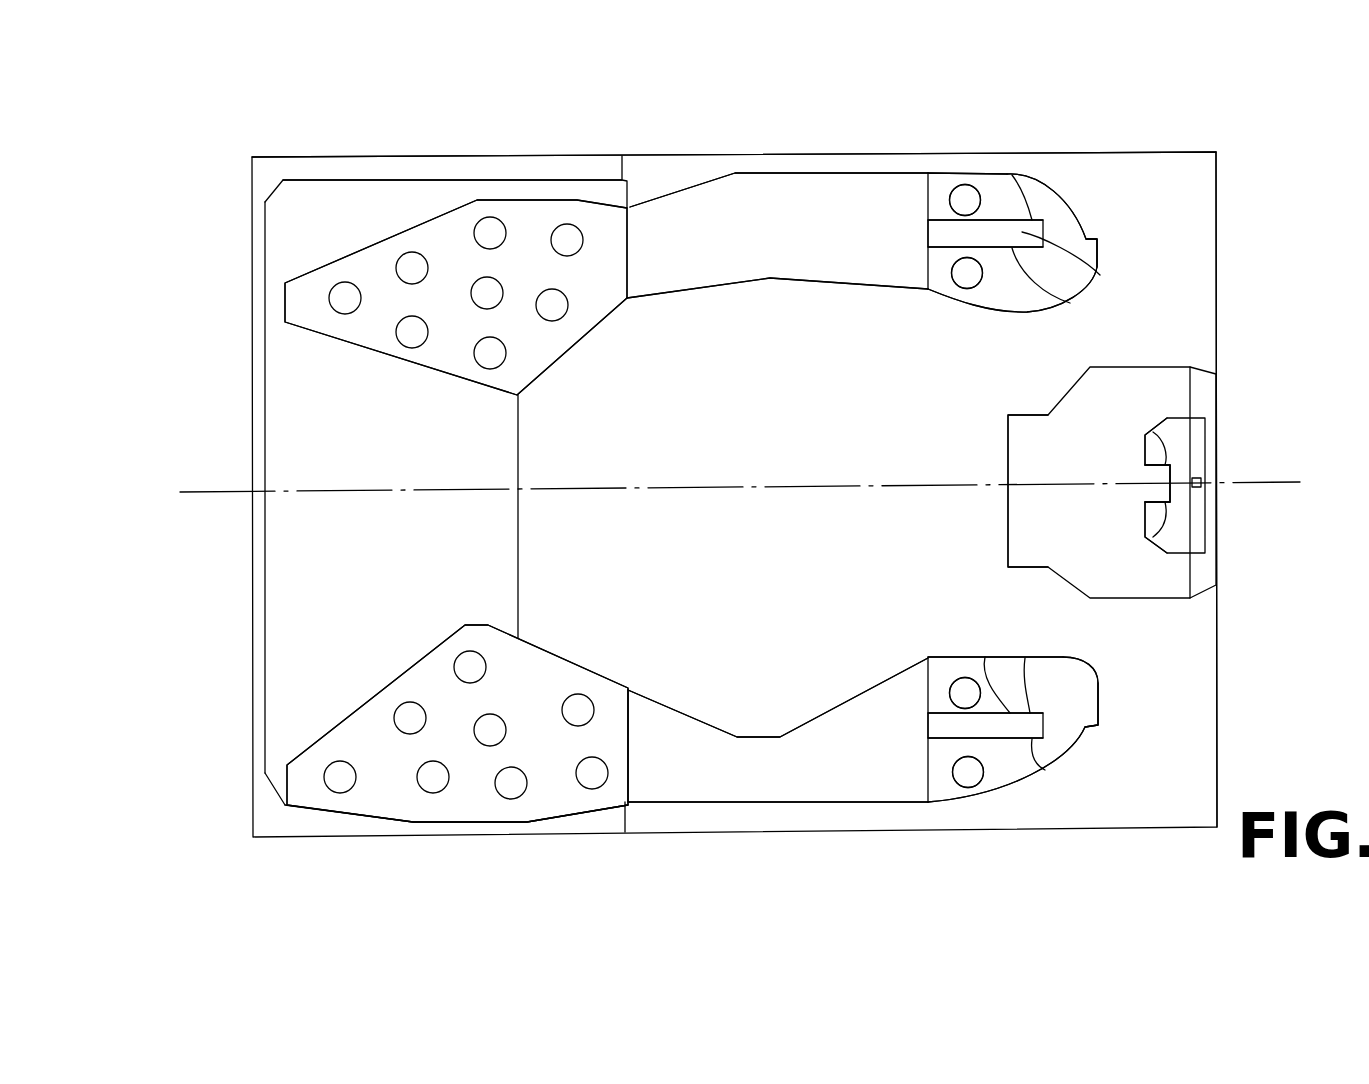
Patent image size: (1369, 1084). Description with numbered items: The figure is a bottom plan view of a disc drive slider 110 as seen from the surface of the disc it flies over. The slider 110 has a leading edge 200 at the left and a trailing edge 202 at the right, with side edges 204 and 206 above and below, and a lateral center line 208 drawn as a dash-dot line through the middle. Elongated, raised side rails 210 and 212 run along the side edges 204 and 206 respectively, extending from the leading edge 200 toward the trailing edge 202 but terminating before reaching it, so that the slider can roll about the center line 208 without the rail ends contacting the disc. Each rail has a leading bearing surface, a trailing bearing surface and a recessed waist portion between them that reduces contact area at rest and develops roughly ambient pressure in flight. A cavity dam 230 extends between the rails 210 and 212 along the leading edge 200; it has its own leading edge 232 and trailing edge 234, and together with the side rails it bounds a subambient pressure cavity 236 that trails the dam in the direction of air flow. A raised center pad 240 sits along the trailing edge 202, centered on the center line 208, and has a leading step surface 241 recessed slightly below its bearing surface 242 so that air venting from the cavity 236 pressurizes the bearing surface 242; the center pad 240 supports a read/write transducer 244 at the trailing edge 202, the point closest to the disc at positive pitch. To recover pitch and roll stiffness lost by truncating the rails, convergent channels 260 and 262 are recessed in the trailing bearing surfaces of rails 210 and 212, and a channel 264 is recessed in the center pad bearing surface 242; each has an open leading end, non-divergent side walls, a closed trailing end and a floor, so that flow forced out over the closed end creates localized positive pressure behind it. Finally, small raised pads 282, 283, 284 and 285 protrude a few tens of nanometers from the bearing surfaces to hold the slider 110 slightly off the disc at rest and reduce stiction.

The slider 110 is at (256, 128).
The leading edge 200 is at (252, 403).
The trailing edge 202 is at (1216, 268).
The side edge 204 is at (552, 156).
The side edge 206 is at (527, 835).
The lateral center line 208 is at (207, 492).
The side rail 210 is at (394, 220).
The side rail 212 is at (362, 822).
The cavity dam 230 is at (303, 538).
The leading edge 232 is at (265, 592).
The trailing edge 234 is at (518, 525).
The subambient pressure cavity 236 is at (773, 411).
The center pad 240 is at (996, 428).
The leading step surface 241 is at (1030, 523).
The bearing surface 242 is at (1177, 450).
The read/write transducer 244 is at (1201, 480).
The convergent channel feature 260 is at (993, 208).
The convergent channel feature 262 is at (1005, 752).
The convergent channel feature 264 is at (1184, 503).
The raised pad 282 is at (477, 365).
The raised pad 283 is at (480, 716).
The raised pad 284 is at (947, 222).
The raised pad 285 is at (963, 757).